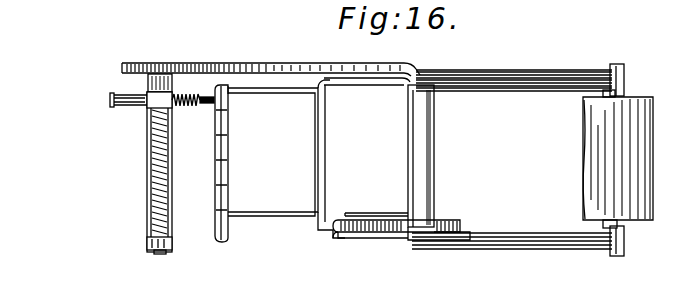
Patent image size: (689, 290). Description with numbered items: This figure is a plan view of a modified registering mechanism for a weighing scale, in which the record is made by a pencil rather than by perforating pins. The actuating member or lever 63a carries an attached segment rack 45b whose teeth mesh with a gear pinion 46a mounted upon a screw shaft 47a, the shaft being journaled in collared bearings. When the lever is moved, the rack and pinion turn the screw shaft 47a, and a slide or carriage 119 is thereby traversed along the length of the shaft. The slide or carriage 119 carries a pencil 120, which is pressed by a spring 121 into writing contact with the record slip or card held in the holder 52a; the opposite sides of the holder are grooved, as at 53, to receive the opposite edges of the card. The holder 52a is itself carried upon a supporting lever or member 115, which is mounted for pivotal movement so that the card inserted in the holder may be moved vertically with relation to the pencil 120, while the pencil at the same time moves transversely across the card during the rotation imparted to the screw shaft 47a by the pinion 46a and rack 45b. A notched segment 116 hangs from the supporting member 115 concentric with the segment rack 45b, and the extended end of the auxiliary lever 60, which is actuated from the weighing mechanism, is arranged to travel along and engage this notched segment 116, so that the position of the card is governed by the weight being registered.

The segment rack 45b is at (282, 53).
The gear pinion 46a is at (132, 63).
The screw shaft 47a is at (148, 158).
The slide or carriage 119 is at (150, 102).
The spring 121 is at (188, 114).
The pencil 120 is at (212, 101).
The grooves 53 is at (218, 88).
The holder 52a is at (230, 151).
The supporting lever or member 115 is at (367, 87).
The auxiliary lever 60 is at (413, 160).
The notched segment 116 is at (353, 236).
The actuating member or lever 63a is at (522, 58).